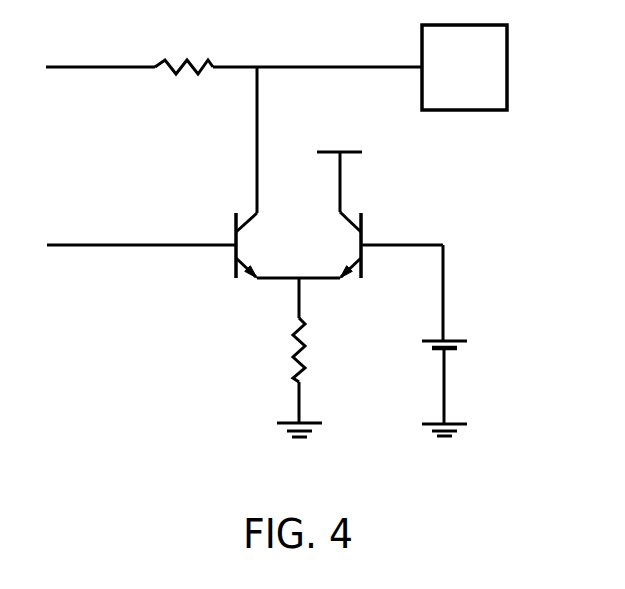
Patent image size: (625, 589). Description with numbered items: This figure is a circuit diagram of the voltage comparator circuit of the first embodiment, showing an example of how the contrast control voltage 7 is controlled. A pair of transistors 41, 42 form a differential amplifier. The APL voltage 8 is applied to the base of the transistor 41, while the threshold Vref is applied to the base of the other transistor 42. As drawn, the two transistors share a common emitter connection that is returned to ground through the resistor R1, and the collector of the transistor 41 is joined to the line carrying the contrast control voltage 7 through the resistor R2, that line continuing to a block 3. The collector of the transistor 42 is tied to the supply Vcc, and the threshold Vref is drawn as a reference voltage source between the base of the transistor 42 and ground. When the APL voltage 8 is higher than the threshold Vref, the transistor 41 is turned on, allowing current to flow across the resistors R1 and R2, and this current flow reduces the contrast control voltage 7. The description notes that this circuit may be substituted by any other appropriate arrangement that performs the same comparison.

The control circuit / block 3 is at (507, 67).
The contrast control voltage 7 is at (76, 67).
The APL voltage 8 is at (75, 245).
The transistor 41 is at (234, 228).
The transistor 42 is at (362, 228).
The resistor R1 is at (317, 357).
The resistor R2 is at (184, 48).
The supply voltage Vcc is at (341, 165).
The threshold Vref is at (482, 340).